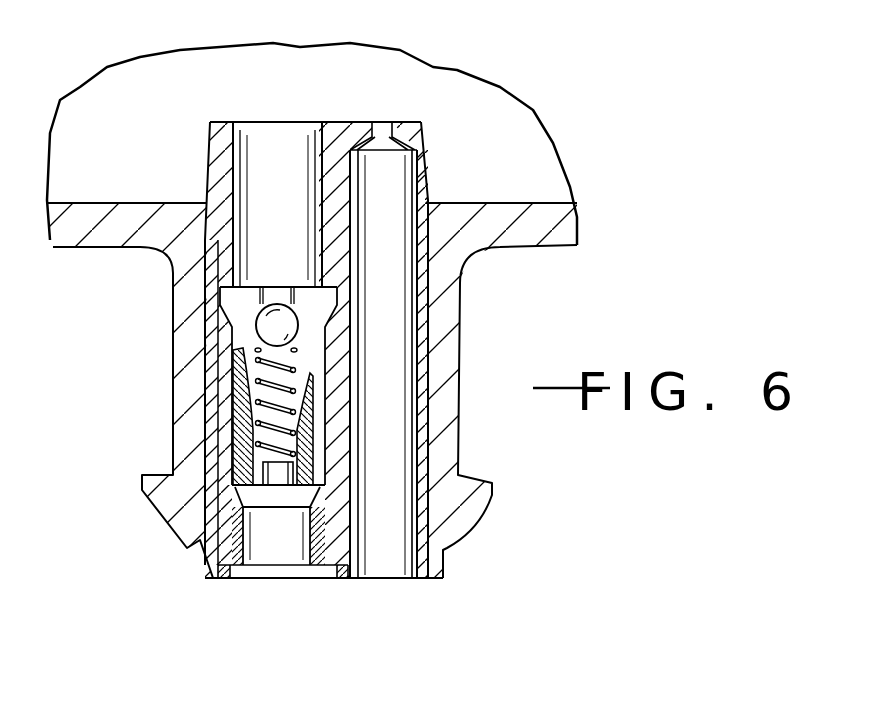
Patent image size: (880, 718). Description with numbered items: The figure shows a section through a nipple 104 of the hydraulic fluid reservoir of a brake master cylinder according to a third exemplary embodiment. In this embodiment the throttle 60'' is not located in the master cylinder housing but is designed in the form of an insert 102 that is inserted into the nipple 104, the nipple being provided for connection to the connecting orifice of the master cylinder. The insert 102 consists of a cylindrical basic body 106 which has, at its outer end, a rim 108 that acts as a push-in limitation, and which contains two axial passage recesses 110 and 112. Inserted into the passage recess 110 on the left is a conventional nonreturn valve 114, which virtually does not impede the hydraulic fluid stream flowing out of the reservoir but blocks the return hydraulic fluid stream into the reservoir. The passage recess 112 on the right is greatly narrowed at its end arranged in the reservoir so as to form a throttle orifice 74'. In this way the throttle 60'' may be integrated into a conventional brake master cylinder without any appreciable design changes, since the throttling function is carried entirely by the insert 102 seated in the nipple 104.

The insert 102 is at (213, 173).
The nipple 104 is at (180, 347).
The cylindrical basic body 106 is at (423, 303).
The rim 108 is at (433, 560).
The passage recess 110 is at (262, 112).
The passage recess 112 is at (390, 565).
The nonreturn valve 114 is at (212, 437).
The throttle orifice 74' is at (439, 88).
The throttle 60'' is at (283, 620).